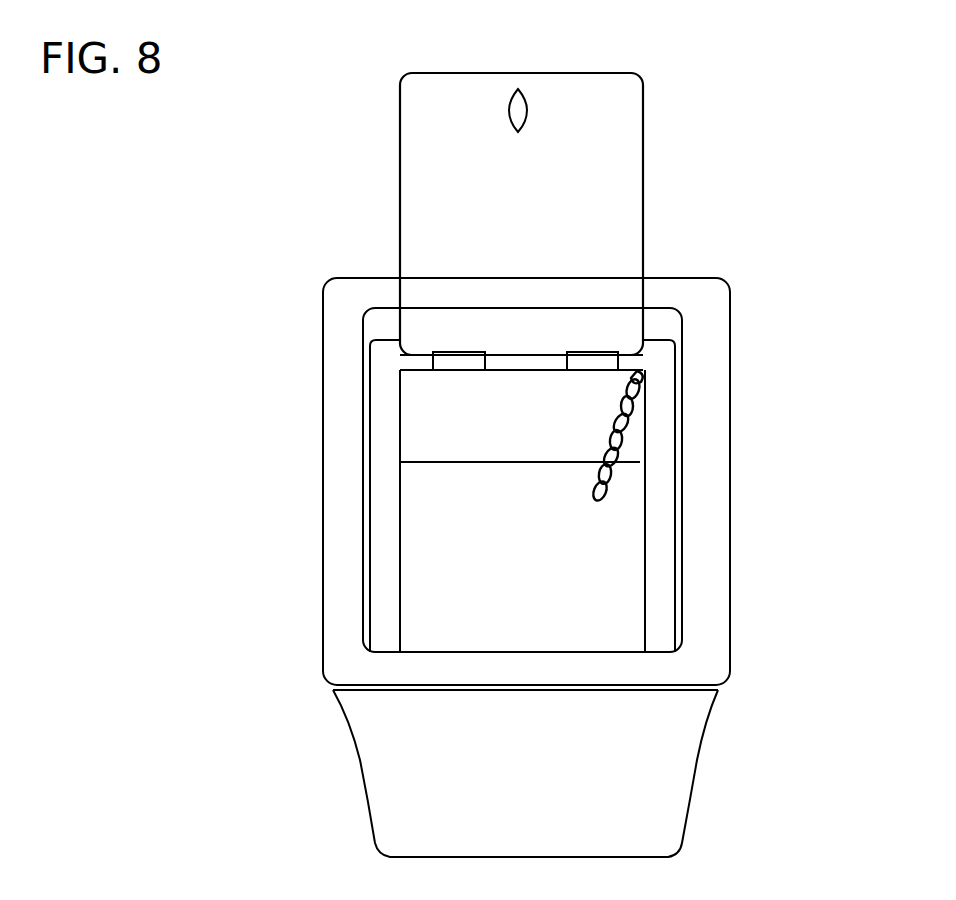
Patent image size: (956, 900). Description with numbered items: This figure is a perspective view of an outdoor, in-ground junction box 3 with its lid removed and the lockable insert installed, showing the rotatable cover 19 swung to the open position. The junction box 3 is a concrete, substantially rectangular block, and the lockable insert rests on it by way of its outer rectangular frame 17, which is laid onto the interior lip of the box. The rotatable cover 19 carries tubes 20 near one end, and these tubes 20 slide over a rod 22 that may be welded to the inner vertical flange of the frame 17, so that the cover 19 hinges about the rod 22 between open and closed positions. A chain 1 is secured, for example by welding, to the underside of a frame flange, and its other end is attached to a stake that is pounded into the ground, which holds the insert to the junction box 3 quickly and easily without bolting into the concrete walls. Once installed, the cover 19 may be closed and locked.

The chain 1 is at (645, 372).
The junction box 3 is at (668, 745).
The outer rectangular frame 17 is at (660, 541).
The rotatable cover 19 is at (446, 176).
The tubes 20 is at (590, 363).
The rod 22 is at (418, 362).